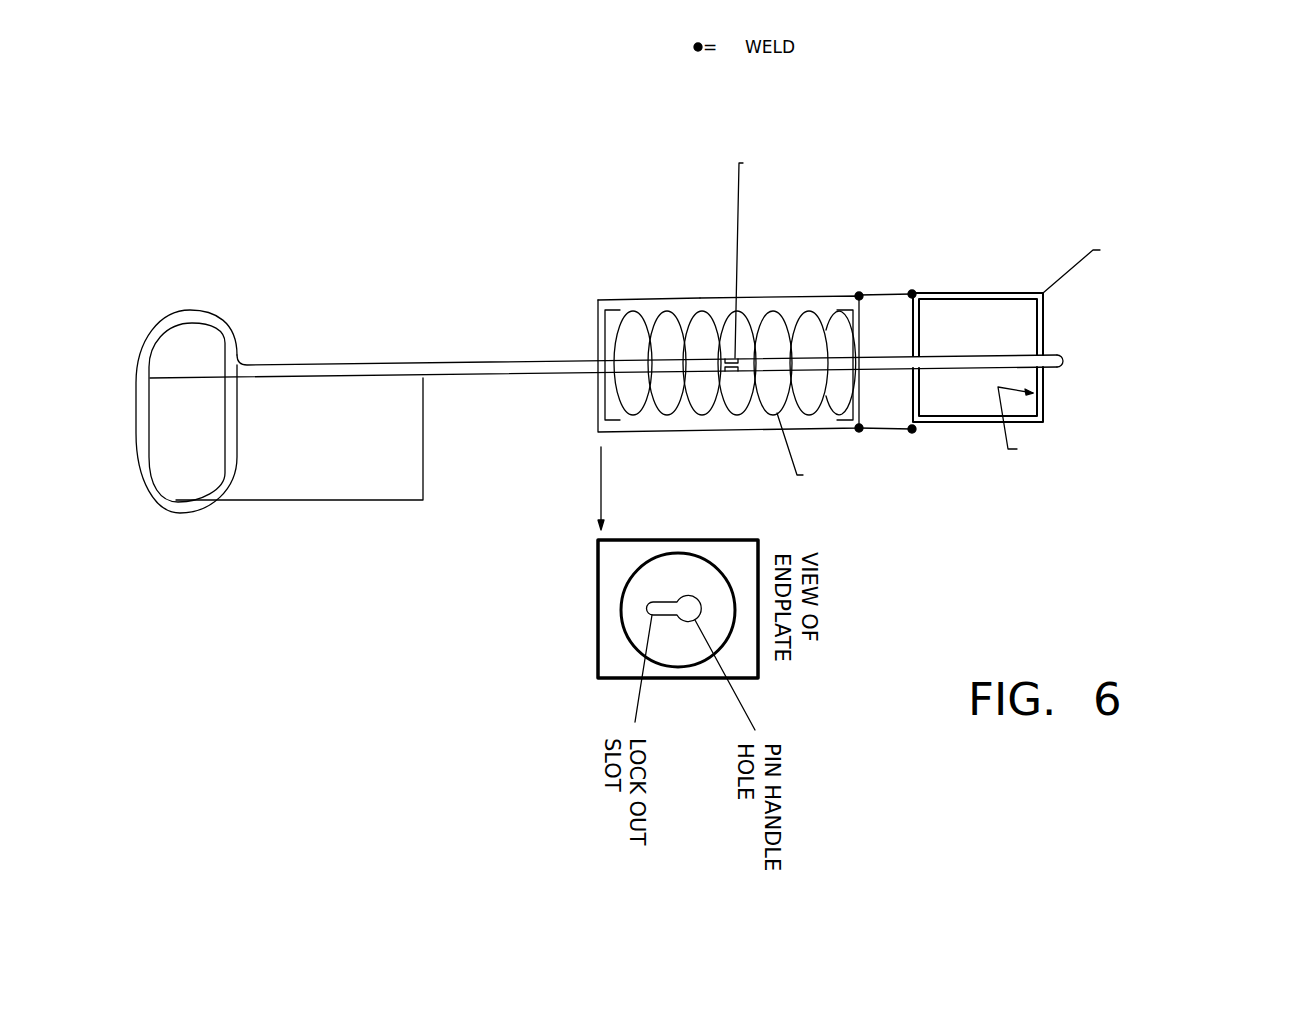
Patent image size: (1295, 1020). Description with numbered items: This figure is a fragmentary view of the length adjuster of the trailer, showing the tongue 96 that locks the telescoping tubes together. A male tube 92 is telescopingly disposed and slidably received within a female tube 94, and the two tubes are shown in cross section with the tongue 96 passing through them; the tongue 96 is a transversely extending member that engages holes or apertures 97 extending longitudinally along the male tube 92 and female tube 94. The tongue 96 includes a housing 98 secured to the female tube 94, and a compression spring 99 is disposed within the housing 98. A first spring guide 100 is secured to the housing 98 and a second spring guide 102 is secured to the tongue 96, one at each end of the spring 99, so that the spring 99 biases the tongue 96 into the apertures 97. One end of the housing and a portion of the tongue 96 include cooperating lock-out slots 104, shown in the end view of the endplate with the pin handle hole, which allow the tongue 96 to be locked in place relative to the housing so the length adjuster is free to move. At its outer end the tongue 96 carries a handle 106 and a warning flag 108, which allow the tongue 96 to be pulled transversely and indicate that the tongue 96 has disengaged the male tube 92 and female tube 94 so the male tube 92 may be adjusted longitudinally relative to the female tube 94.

The male tube 92 is at (977, 300).
The female tube 94 is at (1003, 293).
The tongue 96 is at (430, 368).
The apertures 97 is at (1045, 353).
The housing 98 is at (753, 297).
The spring 99 is at (783, 323).
The first spring guide 100 is at (607, 307).
The second spring guide 102 is at (837, 310).
The lock-out slot 104 is at (732, 357).
The handle 106 is at (215, 322).
The warning flag 108 is at (383, 490).